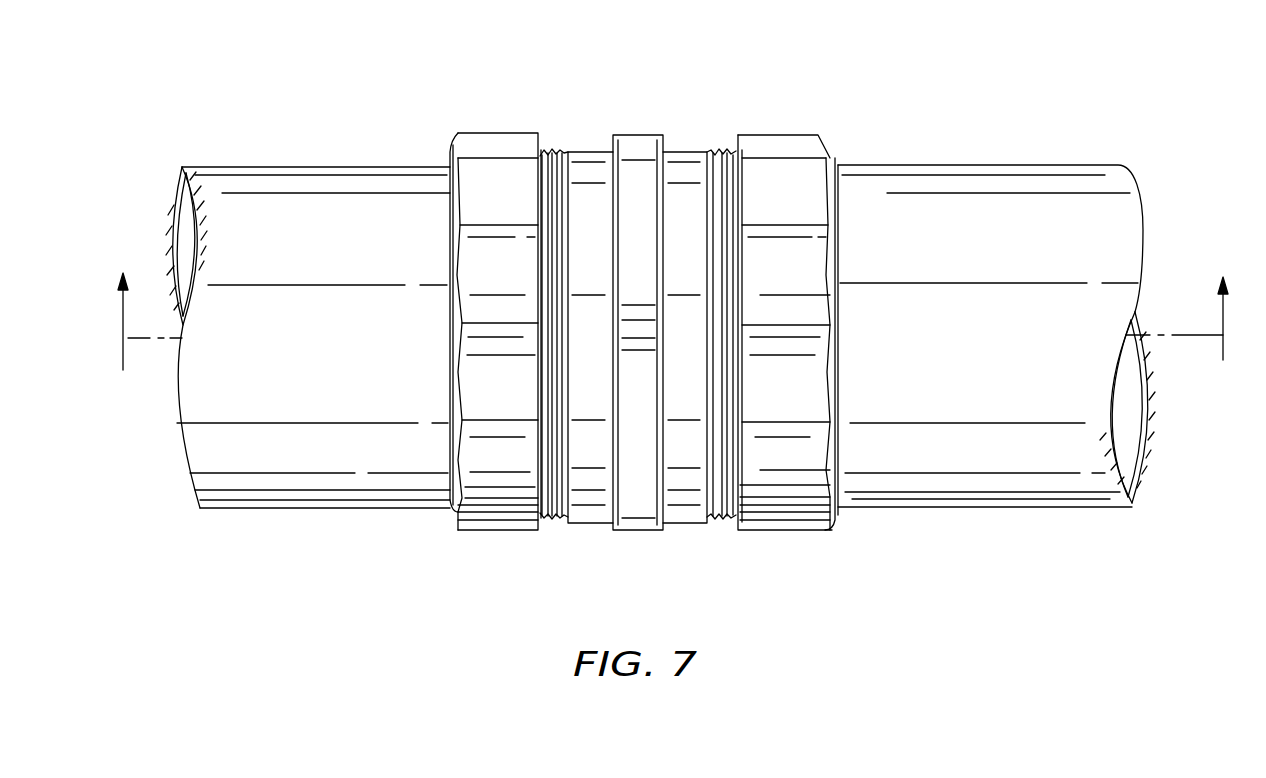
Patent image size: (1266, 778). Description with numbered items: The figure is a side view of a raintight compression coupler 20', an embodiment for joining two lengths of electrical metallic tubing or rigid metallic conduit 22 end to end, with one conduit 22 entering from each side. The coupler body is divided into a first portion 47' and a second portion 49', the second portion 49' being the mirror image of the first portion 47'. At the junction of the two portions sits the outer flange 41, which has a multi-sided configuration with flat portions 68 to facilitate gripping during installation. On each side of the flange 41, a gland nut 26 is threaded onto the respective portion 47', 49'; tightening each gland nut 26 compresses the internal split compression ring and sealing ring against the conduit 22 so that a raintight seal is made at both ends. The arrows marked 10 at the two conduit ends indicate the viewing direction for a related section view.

The viewing direction arrows 10 is at (675, 338).
The raintight compression coupler 20' is at (668, 275).
The electrical metallic tubing or rigid metallic conduit 22 is at (347, 167).
The gland nut 26 is at (497, 523).
The outer flange 41 is at (643, 133).
The first portion 47' is at (540, 291).
The second portion 49' is at (769, 298).
The flat portions 68 is at (640, 213).